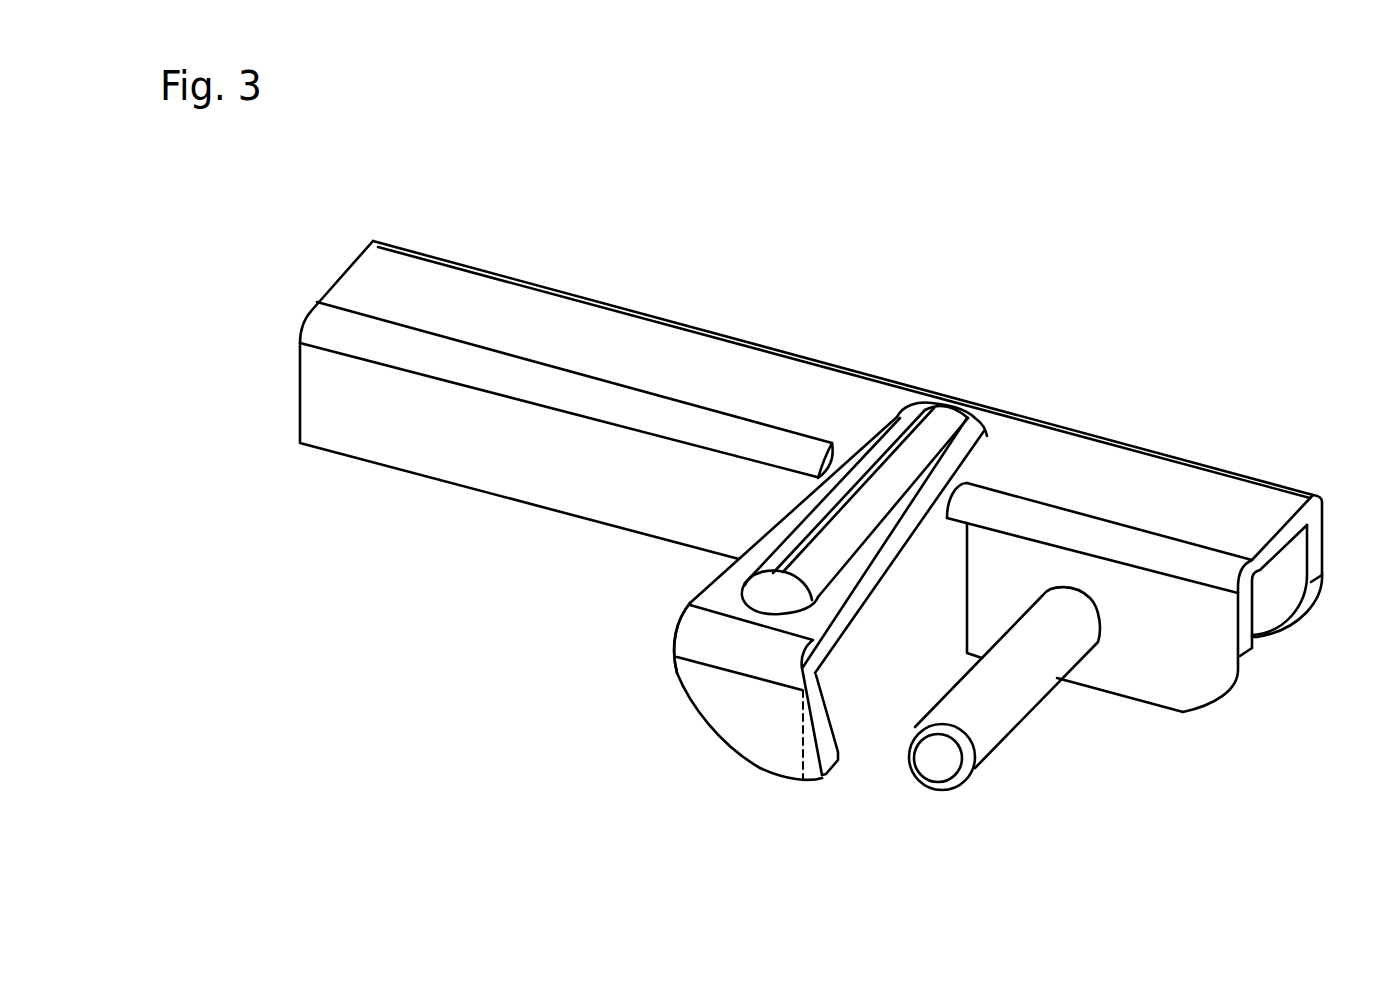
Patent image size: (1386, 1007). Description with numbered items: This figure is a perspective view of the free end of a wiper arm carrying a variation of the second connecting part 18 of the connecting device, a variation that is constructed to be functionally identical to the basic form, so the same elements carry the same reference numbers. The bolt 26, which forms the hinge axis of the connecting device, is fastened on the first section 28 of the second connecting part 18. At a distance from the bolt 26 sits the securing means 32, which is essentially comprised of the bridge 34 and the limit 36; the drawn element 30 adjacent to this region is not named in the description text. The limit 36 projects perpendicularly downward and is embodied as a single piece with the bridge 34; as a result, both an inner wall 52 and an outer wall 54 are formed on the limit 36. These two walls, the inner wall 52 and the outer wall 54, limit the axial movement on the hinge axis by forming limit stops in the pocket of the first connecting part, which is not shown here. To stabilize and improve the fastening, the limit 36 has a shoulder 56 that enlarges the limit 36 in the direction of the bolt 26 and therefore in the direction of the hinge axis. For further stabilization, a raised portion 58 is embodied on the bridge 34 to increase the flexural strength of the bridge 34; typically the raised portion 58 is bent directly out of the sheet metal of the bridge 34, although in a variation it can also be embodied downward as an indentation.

The second connecting part 18 is at (939, 283).
The bolt 26 is at (1042, 688).
The first section 28 is at (1175, 438).
The bracket tongue 30 is at (690, 586).
The securing means 32 is at (655, 633).
The bridge 34 is at (827, 475).
The limit 36 is at (758, 740).
The inner wall 52 is at (842, 702).
The outer wall 54 is at (723, 718).
The shoulder 56 is at (813, 768).
The raised portion 58 is at (953, 424).